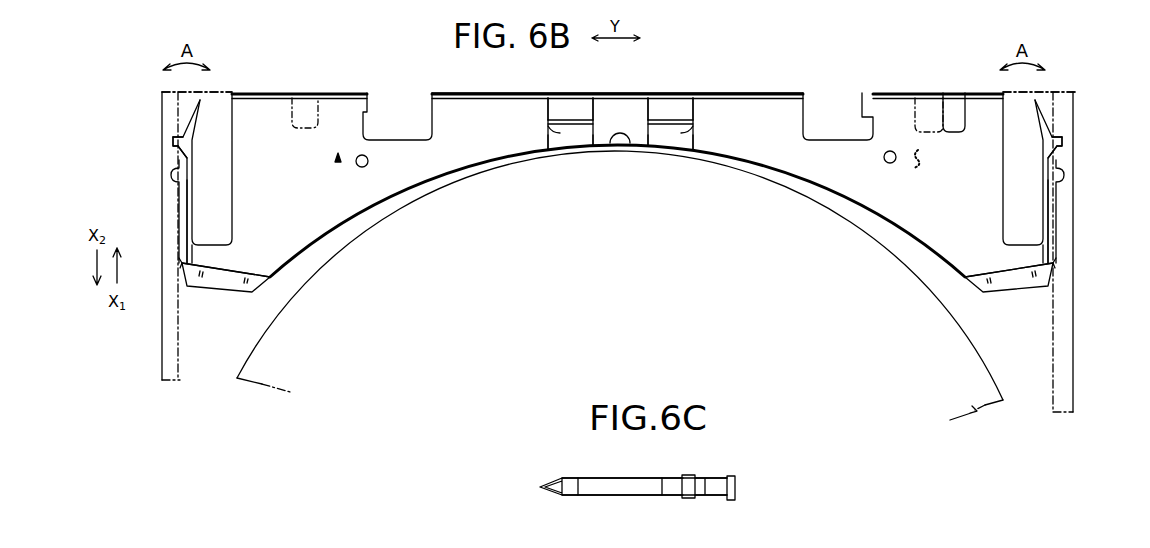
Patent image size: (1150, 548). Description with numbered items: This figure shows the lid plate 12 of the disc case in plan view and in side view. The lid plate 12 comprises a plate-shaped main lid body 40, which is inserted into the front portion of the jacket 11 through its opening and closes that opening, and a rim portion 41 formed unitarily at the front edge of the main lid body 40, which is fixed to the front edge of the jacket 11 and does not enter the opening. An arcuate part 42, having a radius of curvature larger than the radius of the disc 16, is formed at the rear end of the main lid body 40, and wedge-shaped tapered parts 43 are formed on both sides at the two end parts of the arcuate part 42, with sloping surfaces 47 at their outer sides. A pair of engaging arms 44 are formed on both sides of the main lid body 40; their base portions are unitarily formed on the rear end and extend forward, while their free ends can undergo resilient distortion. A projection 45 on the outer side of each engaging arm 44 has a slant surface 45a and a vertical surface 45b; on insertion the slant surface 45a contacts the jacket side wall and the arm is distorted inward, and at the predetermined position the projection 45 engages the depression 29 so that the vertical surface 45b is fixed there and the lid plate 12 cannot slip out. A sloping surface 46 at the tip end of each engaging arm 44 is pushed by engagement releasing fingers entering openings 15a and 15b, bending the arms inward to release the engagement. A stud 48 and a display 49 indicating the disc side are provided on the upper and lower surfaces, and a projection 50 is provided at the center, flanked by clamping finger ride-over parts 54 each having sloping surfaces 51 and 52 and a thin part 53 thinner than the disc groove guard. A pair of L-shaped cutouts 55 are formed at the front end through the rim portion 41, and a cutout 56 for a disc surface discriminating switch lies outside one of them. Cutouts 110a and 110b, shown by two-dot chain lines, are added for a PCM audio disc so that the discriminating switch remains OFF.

In FIG. 6B, the jacket 11 is at (1073, 374).
In FIG. 6B, the lid plate 12 is at (878, 54).
In FIG. 6C, the lid plate 12 is at (576, 463).
In FIG. 6B, the opening 15a is at (200, 92).
In FIG. 6B, the opening 15b is at (1040, 94).
In FIG. 6B, the disc 16 is at (977, 412).
In FIG. 6B, the depression 29 is at (180, 180).
In FIG. 6B, the main lid body 40 is at (443, 172).
In FIG. 6B, the rim portion 41 is at (752, 97).
In FIG. 6C, the rim portion 41 is at (731, 477).
In FIG. 6B, the arcuate part 42 is at (827, 192).
In FIG. 6B, the tapered part 43 is at (216, 285).
In FIG. 6C, the tapered part 43 is at (546, 483).
In FIG. 6B, the engaging arm 44 is at (190, 200).
In FIG. 6C, the engaging arm 44 is at (626, 479).
In FIG. 6B, the projection 45 is at (172, 147).
In FIG. 6C, the projection 45 is at (678, 490).
In FIG. 6B, the slant surface 45a is at (172, 171).
In FIG. 6B, the vertical surface 45b is at (176, 137).
In FIG. 6B, the sloping surface 46 is at (192, 110).
In FIG. 6C, the sloping surface 46 is at (716, 494).
In FIG. 6B, the sloping surface 47 is at (183, 277).
In FIG. 6B, the stud 48 is at (366, 166).
In FIG. 6B, the display 49 is at (336, 160).
In FIG. 6B, the projection 50 is at (620, 143).
In FIG. 6C, the projection 50 is at (688, 475).
In FIG. 6B, the sloping surface 51 is at (553, 93).
In FIG. 6B, the sloping surface 52 is at (548, 130).
In FIG. 6B, the thin part 53 is at (579, 140).
In FIG. 6B, the clamping finger ride-over part 54 is at (580, 105).
In FIG. 6B, the L-shaped cutout 55 is at (430, 107).
In FIG. 6B, the cutout 56 is at (958, 107).
In FIG. 6B, the cutout 110a is at (306, 104).
In FIG. 6B, the cutout 110b is at (930, 104).